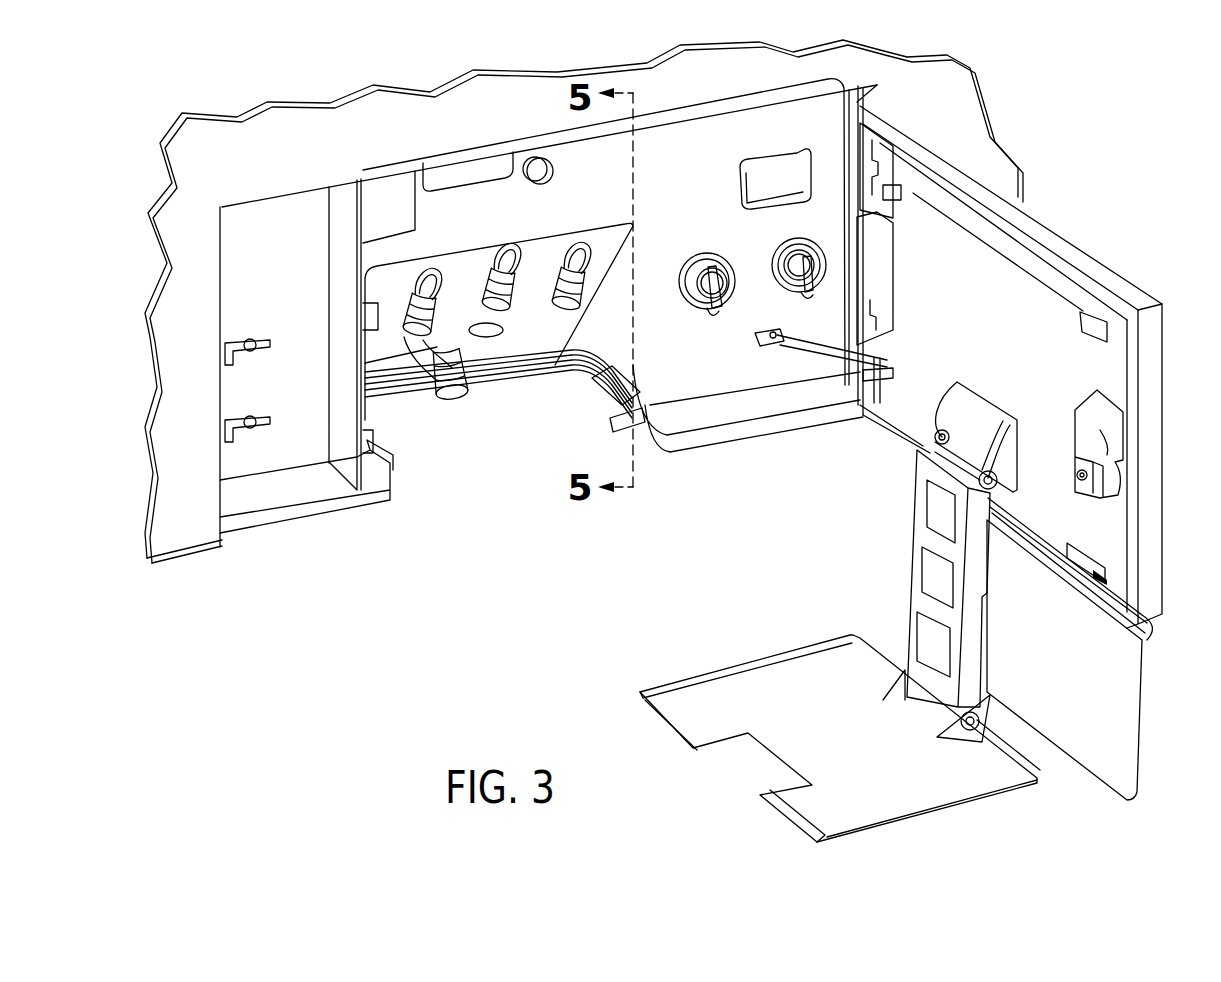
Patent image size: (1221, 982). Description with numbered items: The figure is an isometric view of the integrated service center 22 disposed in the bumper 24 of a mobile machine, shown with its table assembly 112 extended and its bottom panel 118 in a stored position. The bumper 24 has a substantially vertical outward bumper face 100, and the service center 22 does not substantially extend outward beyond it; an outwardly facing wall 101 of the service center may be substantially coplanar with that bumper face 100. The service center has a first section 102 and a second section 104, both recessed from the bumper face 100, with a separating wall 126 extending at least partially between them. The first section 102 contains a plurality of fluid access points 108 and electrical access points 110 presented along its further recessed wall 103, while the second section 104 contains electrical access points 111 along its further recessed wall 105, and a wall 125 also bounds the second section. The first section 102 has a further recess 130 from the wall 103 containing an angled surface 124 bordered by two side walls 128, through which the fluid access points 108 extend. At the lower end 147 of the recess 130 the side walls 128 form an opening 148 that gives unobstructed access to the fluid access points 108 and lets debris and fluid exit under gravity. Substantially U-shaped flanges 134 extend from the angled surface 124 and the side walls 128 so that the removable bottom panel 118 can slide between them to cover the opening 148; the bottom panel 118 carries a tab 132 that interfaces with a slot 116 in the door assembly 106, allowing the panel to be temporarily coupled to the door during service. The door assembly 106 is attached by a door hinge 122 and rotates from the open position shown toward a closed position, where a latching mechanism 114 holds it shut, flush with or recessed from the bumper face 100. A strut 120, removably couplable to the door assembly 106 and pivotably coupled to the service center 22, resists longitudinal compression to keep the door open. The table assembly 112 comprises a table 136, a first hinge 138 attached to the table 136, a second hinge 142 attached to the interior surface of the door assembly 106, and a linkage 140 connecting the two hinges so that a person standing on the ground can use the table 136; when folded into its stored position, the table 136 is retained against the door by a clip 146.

The integrated service center 22 is at (636, 539).
The bumper 24 is at (372, 83).
The outward bumper face 100 is at (465, 110).
The outwardly facing wall 101 is at (828, 345).
The first section 102 is at (366, 172).
The wall of the first section 103 is at (783, 137).
The second section 104 is at (363, 175).
The wall of the second section 105 is at (263, 227).
The door assembly 106 is at (1153, 337).
The fluid access points 108 is at (571, 286).
The electrical access points 110 is at (800, 250).
The electrical access points 111 is at (253, 352).
The table assembly 112 is at (828, 553).
The latching mechanism 114 is at (1103, 433).
The slot 116 is at (1100, 562).
The removable bottom panel 118 is at (1103, 681).
The strut 120 is at (824, 345).
The door hinge 122 is at (870, 320).
The angled surface 124 is at (383, 353).
The wall 125 is at (222, 453).
The separating wall 126 is at (347, 442).
The side walls 128 is at (605, 318).
The recess 130 is at (635, 217).
The tab 132 is at (1095, 565).
The flanges 134 is at (622, 400).
The table 136 is at (887, 798).
The first hinge 138 is at (973, 727).
The linkage 140 is at (913, 562).
The second hinge 142 is at (927, 442).
The clip 146 is at (1023, 265).
The lower end 147 is at (641, 372).
The opening 148 is at (450, 483).